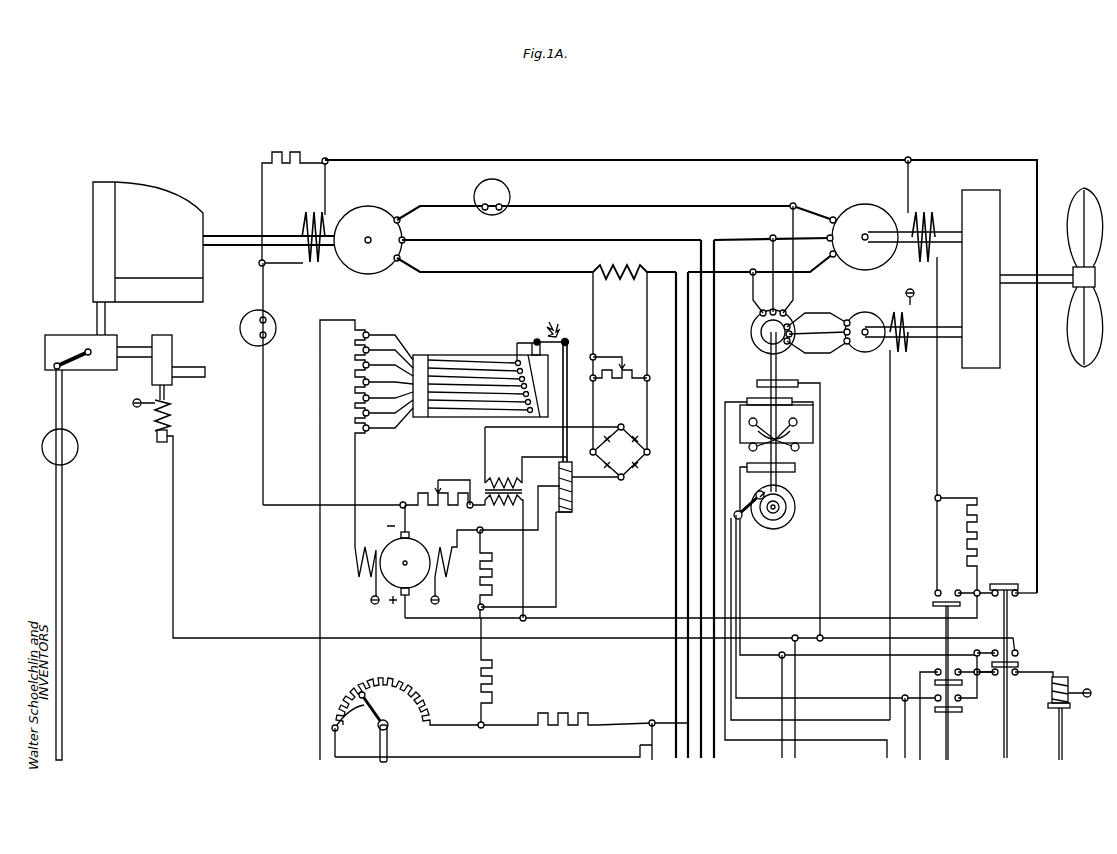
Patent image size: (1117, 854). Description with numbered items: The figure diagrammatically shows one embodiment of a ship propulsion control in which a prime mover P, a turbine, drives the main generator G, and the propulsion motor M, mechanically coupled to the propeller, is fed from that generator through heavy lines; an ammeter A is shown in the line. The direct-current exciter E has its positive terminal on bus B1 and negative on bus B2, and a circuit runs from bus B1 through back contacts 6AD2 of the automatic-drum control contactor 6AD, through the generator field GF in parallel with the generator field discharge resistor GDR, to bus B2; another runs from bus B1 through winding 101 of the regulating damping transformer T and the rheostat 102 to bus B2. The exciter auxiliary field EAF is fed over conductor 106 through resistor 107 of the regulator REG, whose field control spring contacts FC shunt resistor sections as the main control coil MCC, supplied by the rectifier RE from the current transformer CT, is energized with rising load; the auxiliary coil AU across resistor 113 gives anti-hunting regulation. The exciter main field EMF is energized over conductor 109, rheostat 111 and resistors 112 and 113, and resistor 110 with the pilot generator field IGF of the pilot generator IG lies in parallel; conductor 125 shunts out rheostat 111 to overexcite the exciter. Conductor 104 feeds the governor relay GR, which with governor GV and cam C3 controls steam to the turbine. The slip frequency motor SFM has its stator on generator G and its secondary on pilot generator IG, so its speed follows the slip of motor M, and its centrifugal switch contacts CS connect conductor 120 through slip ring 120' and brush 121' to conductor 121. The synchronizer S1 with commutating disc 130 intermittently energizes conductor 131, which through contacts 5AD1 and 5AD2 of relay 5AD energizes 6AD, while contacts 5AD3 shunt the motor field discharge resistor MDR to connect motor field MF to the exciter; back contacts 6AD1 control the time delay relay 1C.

The prime mover P is at (160, 204).
The generator field discharge resistor GDR is at (293, 209).
The generator field GF is at (308, 216).
The main generator G is at (563, 229).
The ammeter A is at (510, 196).
The current transformer CT is at (633, 256).
The propulsion motor M is at (880, 199).
The motor field MF is at (920, 214).
The slip frequency motor SFM is at (742, 329).
The pilot generator IG is at (870, 304).
The pilot generator field IGF is at (906, 516).
The slip ring 120' is at (772, 499).
The brush 121' is at (802, 569).
The centrifugal switch contacts CS is at (800, 450).
The conductor 121 is at (849, 603).
The synchronizer S1 is at (802, 538).
The commutating disc 130 is at (782, 497).
The conductor 131 is at (737, 560).
The conductor 120 is at (810, 619).
The conductor 104 is at (800, 685).
The bus B1 is at (625, 620).
The conductor 106 is at (320, 608).
The governor GV is at (100, 376).
The governor relay GR is at (172, 421).
The cam C3 is at (76, 460).
The bus B2 is at (270, 508).
The resistor 107 is at (357, 386).
The regulator REG is at (457, 339).
The field control spring contacts FC is at (483, 380).
The rheostat 102 is at (418, 493).
The regulating damping transformer T is at (506, 473).
The transformer winding 101 is at (494, 506).
The direct-current exciter E is at (390, 538).
The exciter auxiliary field EAF is at (353, 575).
The exciter main field EMF is at (455, 567).
The resistor 113 is at (496, 572).
The main control coil MCC is at (573, 478).
The auxiliary coil AU is at (573, 505).
The rectifier RE is at (643, 460).
The resistor 112 is at (492, 688).
The rheostat 111 is at (405, 711).
The resistor 110 is at (560, 714).
The conductor 109 is at (577, 760).
The conductor 125 is at (647, 737).
The motor field discharge resistor MDR is at (977, 544).
The contacts 5AD3 is at (934, 592).
The contacts 5AD2 is at (935, 670).
The contacts 5AD1 is at (965, 708).
The control relay 5AD is at (986, 750).
The back contacts 6AD2 is at (1010, 598).
The contacts 6AD1 is at (1017, 651).
The automatic-drum control contactor 6AD is at (1038, 745).
The control relay 1C is at (1086, 735).